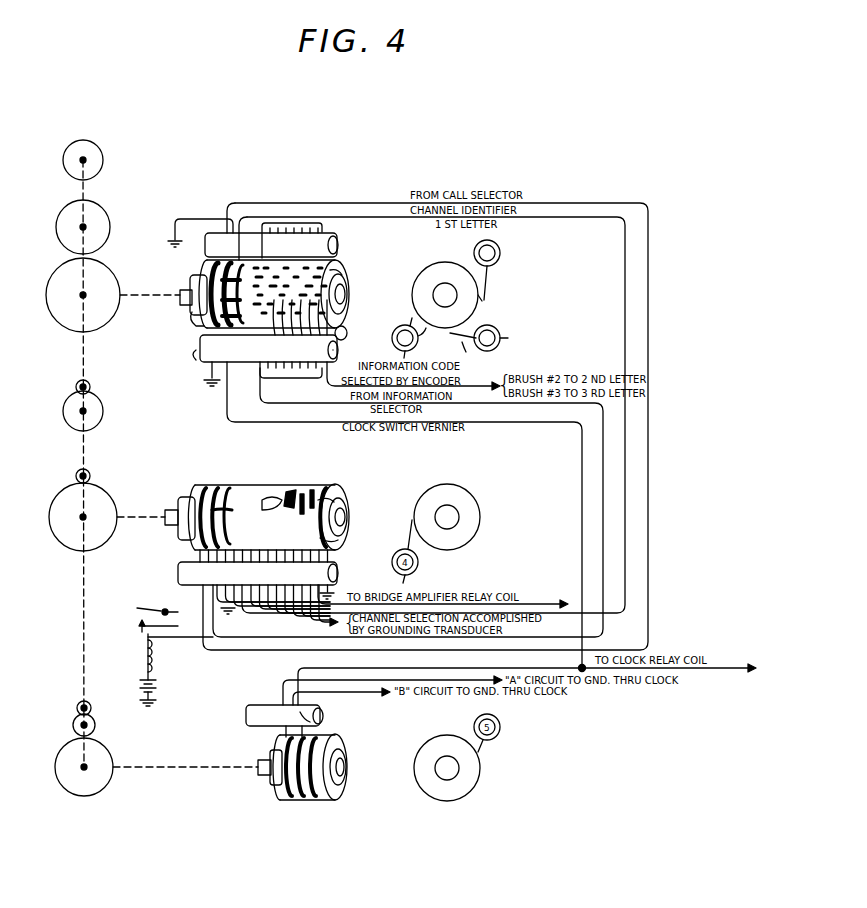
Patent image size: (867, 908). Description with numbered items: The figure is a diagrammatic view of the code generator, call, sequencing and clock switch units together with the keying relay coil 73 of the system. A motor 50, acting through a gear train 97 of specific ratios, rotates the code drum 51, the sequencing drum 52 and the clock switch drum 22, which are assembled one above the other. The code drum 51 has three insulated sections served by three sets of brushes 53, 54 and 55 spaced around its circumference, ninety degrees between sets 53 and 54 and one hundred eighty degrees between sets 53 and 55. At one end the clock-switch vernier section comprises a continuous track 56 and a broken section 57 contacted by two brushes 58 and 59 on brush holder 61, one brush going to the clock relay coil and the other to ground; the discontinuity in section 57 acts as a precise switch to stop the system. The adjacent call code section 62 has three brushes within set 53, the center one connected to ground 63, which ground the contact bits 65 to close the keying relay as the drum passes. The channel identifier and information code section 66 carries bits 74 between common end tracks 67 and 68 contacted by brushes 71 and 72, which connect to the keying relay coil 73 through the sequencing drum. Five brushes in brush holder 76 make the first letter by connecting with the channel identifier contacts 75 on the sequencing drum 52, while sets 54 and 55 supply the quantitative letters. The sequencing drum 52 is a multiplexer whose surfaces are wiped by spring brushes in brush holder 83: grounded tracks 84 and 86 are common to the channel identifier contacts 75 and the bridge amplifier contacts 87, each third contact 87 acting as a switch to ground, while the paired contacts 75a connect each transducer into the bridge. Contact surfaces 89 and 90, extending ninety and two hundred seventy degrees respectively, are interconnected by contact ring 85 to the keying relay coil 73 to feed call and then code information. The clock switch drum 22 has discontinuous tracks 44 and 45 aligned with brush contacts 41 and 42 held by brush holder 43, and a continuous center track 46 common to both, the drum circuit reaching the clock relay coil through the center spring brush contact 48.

The motor 50 is at (74, 142).
The gear train 97 is at (83, 366).
The code drum 51 is at (343, 282).
The bits 74 is at (290, 301).
The continuous track 56 is at (190, 282).
The broken section 57 is at (206, 270).
The brush 58 is at (194, 322).
The brush 59 is at (200, 352).
The contact bits 65 is at (232, 262).
The brush holder 76 is at (250, 255).
The contact surface 67 is at (262, 244).
The channel identifier and information code section 66 is at (291, 221).
The set of brushes 53 is at (357, 231).
The contact surface 68 is at (344, 268).
The brush 71 is at (256, 345).
The brush holder 61 is at (254, 366).
The set of brushes 54 is at (375, 322).
The brush 72 is at (344, 348).
The call code section 62 is at (245, 196).
The ground 63 is at (170, 240).
The set of brushes 55 is at (410, 320).
The sequencing drum 52 is at (338, 489).
The contact ring 85 is at (205, 487).
The track 86 is at (222, 512).
The channel identifier contacts 75 is at (267, 507).
The contacts 75a is at (292, 502).
The third contact 87 is at (344, 500).
The contact track 84 is at (340, 540).
The conductive surface 90 is at (192, 498).
The contact surface 89 is at (186, 536).
The brush holder 83 is at (178, 568).
The keying relay coil 73 is at (144, 666).
The clock switch drum 22 is at (348, 753).
The brush contact 41 is at (326, 744).
The contact track 45 is at (286, 788).
The contact track 44 is at (342, 788).
The brush contact 42 is at (282, 744).
The center track 46 is at (296, 800).
The brush holder 43 is at (266, 705).
The center spring brush contact 48 is at (302, 713).